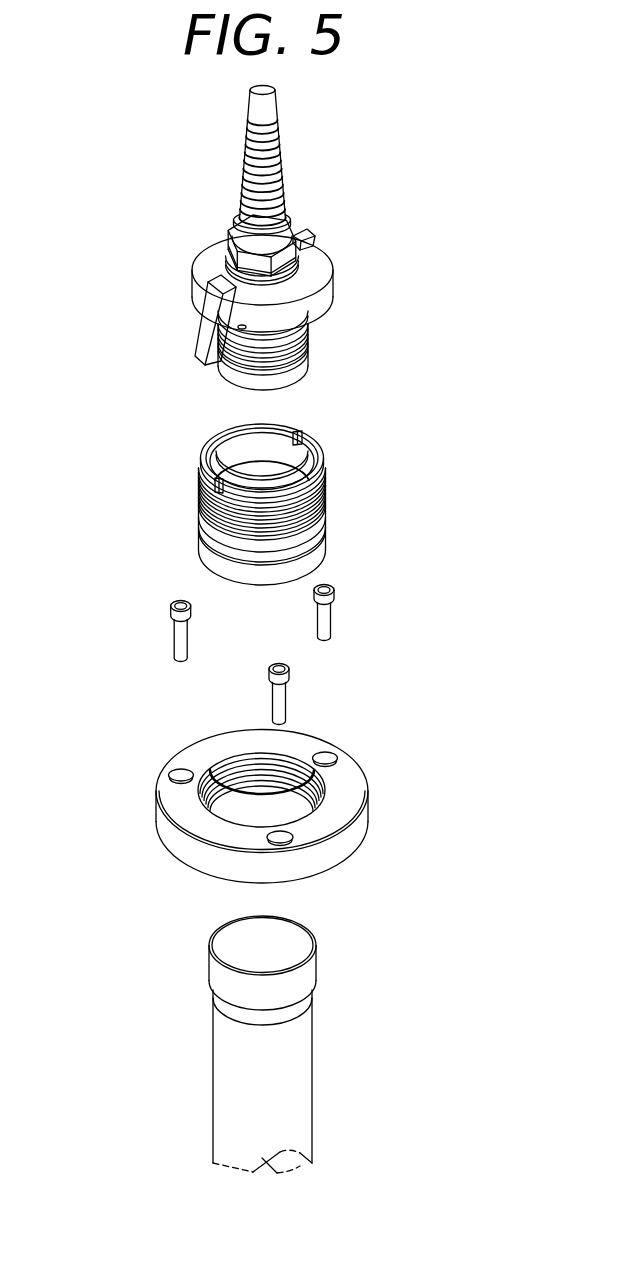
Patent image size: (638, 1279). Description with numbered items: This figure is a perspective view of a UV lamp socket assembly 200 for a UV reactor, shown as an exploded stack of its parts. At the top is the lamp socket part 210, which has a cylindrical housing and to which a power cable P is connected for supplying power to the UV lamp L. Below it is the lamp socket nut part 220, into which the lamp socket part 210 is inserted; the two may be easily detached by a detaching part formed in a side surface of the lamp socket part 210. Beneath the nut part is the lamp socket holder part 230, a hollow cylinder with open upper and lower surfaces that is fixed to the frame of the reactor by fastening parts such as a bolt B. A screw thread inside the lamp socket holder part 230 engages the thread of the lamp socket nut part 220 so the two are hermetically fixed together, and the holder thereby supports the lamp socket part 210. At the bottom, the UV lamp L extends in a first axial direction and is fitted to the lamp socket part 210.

The UV lamp socket assembly 200 is at (393, 168).
The power cable P is at (252, 161).
The lamp socket part 210 is at (178, 283).
The lamp socket nut part 220 is at (333, 474).
The bolt B is at (330, 630).
The lamp socket holder part 230 is at (158, 767).
The UV lamp L is at (290, 1050).